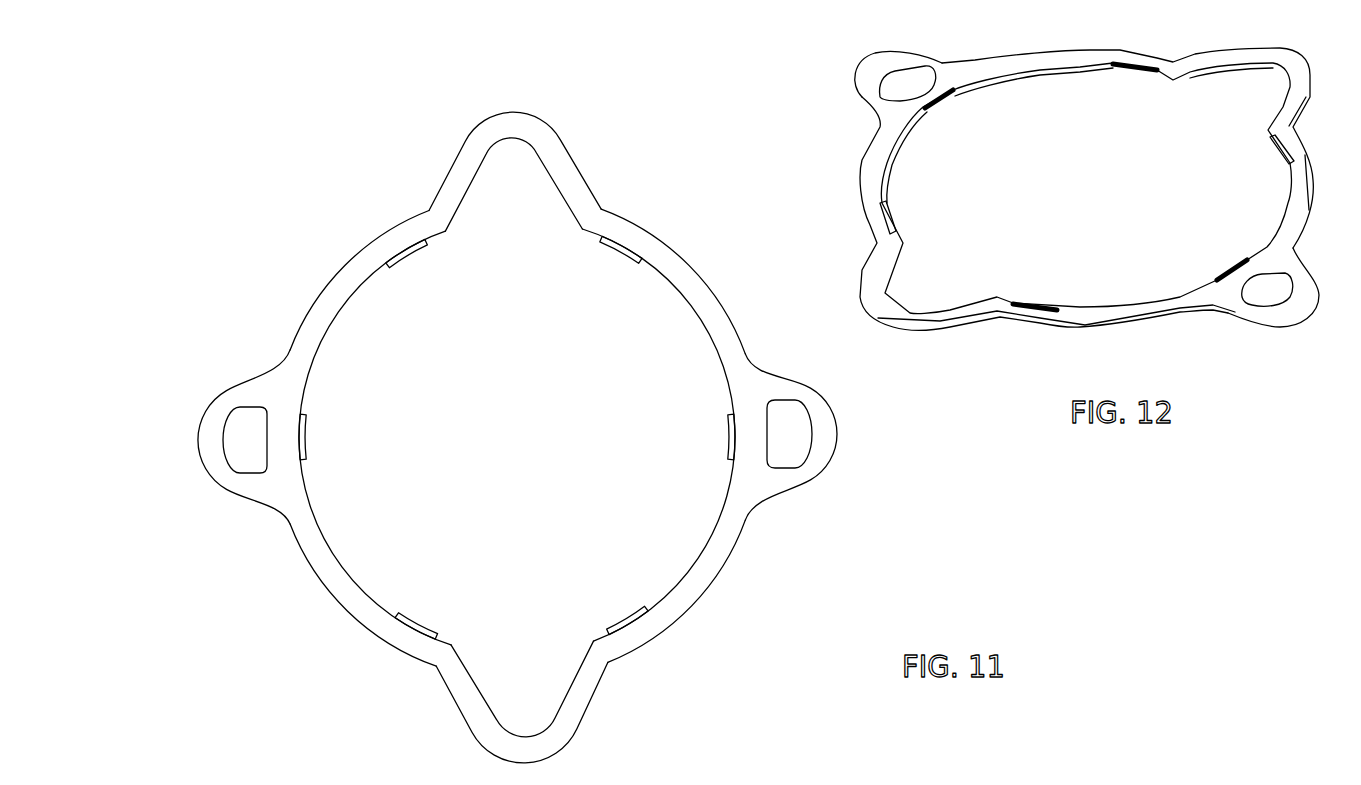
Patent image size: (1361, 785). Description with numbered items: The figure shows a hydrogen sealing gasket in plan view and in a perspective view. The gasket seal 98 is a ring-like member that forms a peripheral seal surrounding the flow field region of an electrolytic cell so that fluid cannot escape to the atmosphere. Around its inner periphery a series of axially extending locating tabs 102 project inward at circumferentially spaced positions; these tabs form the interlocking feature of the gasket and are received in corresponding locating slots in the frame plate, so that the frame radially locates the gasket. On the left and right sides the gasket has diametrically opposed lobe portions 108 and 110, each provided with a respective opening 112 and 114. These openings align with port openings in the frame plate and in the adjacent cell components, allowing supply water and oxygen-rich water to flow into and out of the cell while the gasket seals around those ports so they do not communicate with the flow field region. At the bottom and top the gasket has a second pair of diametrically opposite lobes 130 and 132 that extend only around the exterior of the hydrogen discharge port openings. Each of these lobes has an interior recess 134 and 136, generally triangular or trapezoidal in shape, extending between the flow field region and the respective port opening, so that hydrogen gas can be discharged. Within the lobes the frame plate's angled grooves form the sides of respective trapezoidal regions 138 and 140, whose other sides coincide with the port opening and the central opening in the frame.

In FIG. 11, the gasket seal 98 is at (695, 636).
In FIG. 12, the gasket seal 98 is at (991, 341).
In FIG. 11, the locating tabs 102 is at (623, 250).
In FIG. 12, the locating tabs 102 is at (945, 107).
In FIG. 11, the lobe portion 108 is at (244, 439).
In FIG. 12, the lobe portion 108 is at (858, 100).
In FIG. 11, the lobe portion 110 is at (803, 432).
In FIG. 12, the lobe portion 110 is at (1258, 326).
In FIG. 11, the opening 112 is at (245, 427).
In FIG. 11, the opening 114 is at (797, 403).
In FIG. 11, the lobe 130 is at (580, 725).
In FIG. 11, the lobe 132 is at (563, 135).
In FIG. 11, the interior recess 134 is at (480, 693).
In FIG. 11, the interior recess 136 is at (473, 185).
In FIG. 11, the trapezoidal region 138 is at (544, 690).
In FIG. 11, the trapezoidal region 140 is at (544, 178).